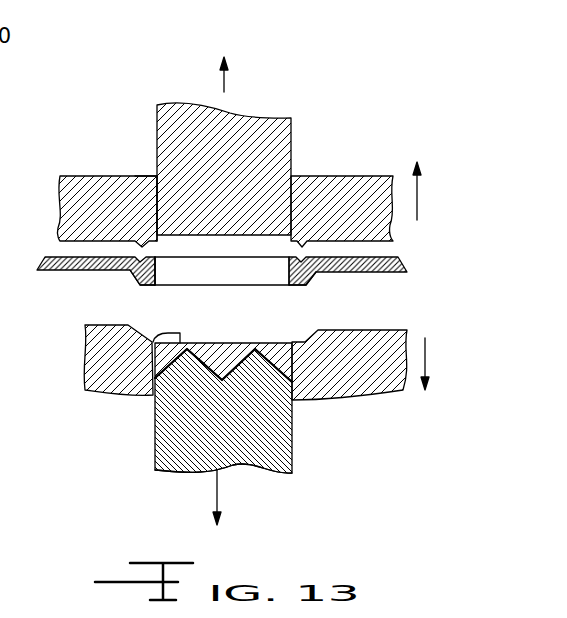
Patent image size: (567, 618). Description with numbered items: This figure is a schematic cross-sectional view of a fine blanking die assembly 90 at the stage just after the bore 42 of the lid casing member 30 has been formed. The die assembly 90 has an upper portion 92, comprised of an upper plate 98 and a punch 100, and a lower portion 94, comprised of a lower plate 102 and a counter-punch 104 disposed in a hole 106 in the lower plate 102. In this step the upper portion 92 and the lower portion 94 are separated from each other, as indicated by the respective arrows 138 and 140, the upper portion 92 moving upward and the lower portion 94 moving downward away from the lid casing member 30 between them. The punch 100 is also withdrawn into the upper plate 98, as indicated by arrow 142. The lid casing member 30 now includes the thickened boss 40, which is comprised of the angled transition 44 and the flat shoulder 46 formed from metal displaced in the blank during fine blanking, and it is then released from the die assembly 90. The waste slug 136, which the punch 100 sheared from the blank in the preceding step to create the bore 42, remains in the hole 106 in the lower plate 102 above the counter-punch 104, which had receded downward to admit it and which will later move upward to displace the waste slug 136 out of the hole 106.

The fine blanking die assembly 90 is at (215, 134).
The upper portion 92 is at (96, 157).
The upper plate 98 is at (133, 176).
The punch 100 is at (291, 118).
The arrow 142 is at (228, 82).
The arrow 138 is at (417, 192).
The lid casing member 30 is at (208, 254).
The angled transition 44 is at (132, 276).
The flat shoulder 46 is at (143, 287).
The bore 42 is at (202, 276).
The thickened boss 40 is at (322, 287).
The lower portion 94 is at (220, 419).
The lower plate 102 is at (133, 398).
The hole 106 is at (262, 419).
The waste slug 136 is at (237, 348).
The counter-punch 104 is at (272, 473).
The arrow 140 is at (425, 355).